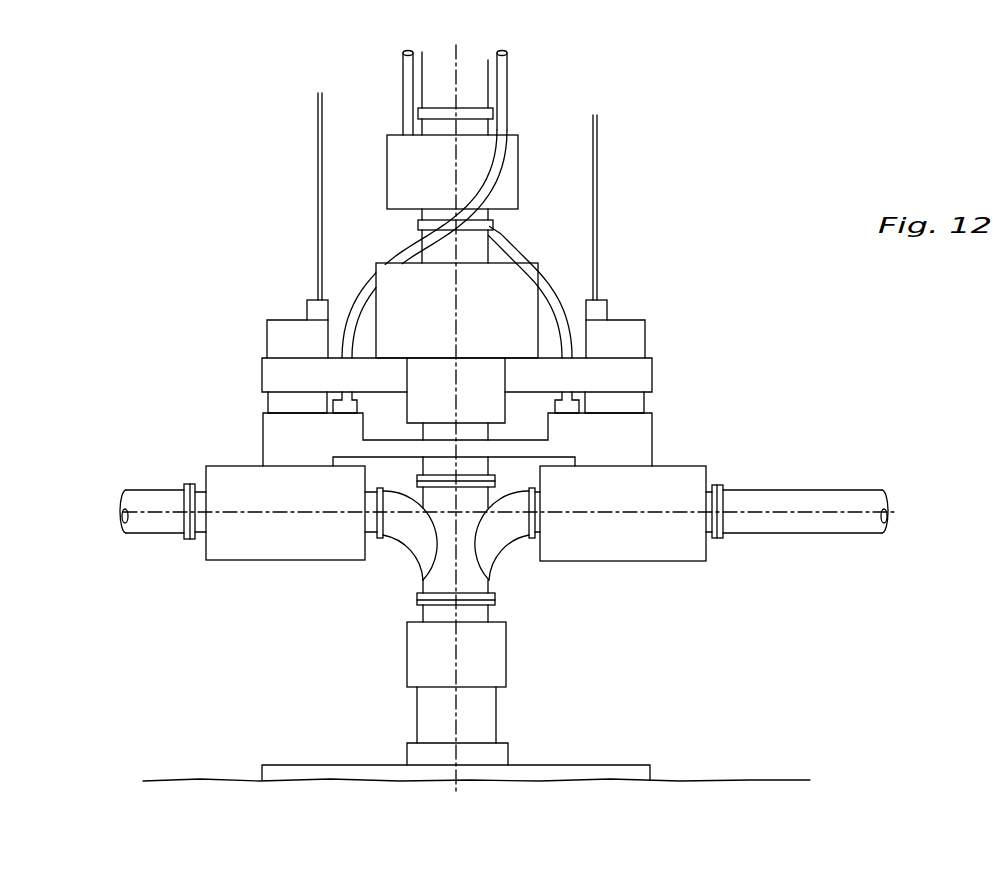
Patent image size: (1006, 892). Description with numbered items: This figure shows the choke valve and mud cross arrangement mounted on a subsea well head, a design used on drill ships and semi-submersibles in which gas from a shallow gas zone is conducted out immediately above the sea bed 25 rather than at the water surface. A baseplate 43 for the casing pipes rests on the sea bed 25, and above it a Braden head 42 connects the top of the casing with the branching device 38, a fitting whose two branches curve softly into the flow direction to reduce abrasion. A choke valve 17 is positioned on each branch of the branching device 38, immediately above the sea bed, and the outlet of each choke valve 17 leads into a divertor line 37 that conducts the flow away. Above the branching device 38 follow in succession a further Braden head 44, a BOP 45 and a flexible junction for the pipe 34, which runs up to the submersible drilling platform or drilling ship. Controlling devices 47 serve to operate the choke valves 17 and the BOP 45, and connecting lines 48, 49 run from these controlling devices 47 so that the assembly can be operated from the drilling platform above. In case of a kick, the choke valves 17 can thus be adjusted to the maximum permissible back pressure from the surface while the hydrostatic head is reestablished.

The choke valve 17 is at (293, 537).
The sea bed 25 is at (770, 780).
The pipe 34 is at (470, 82).
The divertor line 37 is at (157, 523).
The branching device 38 is at (437, 582).
The Braden head 42 is at (477, 666).
The baseplate 43 is at (565, 773).
The Braden head 44 is at (508, 168).
The BOP 45 is at (503, 290).
The controlling devices 47 is at (630, 407).
The connecting line 48 is at (317, 225).
The connecting line 49 is at (598, 213).